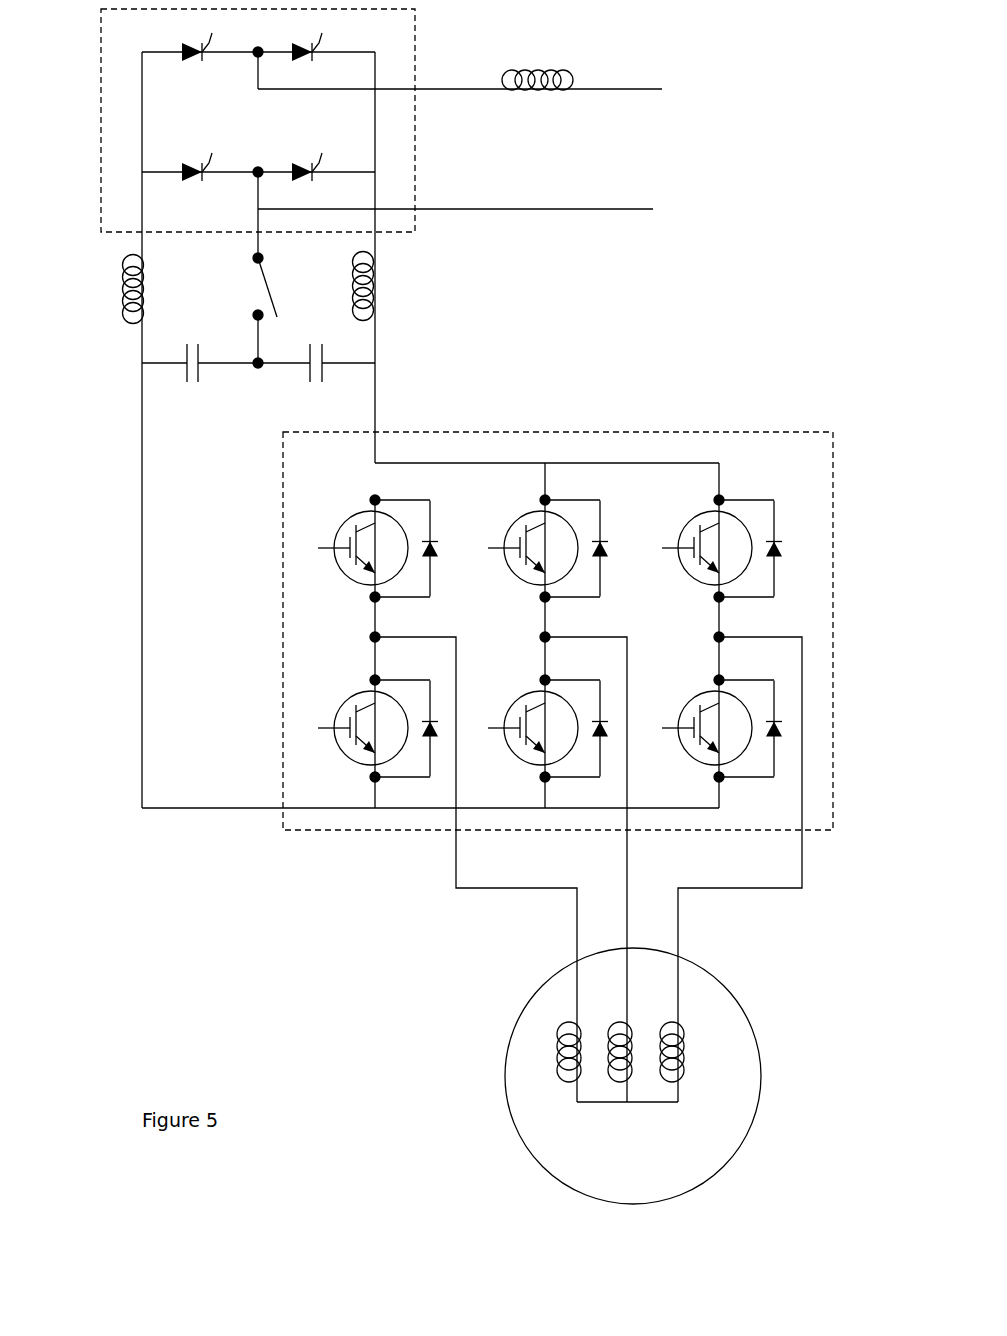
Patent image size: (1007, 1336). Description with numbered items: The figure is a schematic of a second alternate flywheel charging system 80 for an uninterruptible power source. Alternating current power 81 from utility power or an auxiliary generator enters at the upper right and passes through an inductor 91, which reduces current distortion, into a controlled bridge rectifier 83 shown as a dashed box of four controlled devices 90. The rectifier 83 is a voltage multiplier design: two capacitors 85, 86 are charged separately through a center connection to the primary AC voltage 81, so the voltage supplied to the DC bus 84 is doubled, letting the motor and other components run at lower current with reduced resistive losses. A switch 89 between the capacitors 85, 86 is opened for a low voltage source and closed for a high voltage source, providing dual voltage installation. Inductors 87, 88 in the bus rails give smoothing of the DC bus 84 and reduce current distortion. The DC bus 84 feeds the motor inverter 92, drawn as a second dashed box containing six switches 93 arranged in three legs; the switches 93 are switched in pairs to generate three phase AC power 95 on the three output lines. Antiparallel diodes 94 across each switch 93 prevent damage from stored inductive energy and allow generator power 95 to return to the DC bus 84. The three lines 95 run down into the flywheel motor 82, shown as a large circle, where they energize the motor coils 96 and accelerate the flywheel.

The charging system 80 is at (240, 945).
The alternating current power 81 is at (735, 166).
The flywheel motor 82 is at (757, 1045).
The controlled bridge rectifier 83 is at (415, 232).
The DC bus 84 is at (233, 420).
The capacitor 85 is at (322, 370).
The capacitor 86 is at (187, 345).
The inductor 87 is at (375, 302).
The inductor 88 is at (120, 285).
The switch 89 is at (277, 292).
The thyristor 90 is at (306, 162).
The inductor 91 is at (540, 90).
The motor inverter 92 is at (687, 432).
The switches 93 is at (680, 523).
The antiparallel diodes 94 is at (774, 530).
The three phase AC power 95 is at (657, 928).
The motor coils 96 is at (558, 1038).